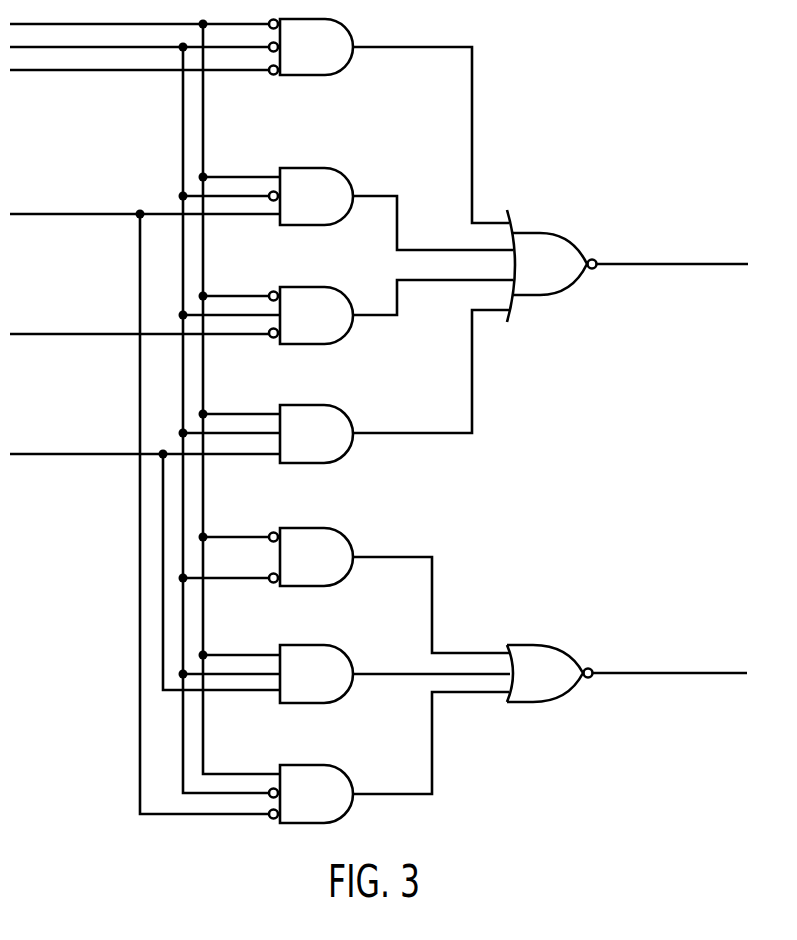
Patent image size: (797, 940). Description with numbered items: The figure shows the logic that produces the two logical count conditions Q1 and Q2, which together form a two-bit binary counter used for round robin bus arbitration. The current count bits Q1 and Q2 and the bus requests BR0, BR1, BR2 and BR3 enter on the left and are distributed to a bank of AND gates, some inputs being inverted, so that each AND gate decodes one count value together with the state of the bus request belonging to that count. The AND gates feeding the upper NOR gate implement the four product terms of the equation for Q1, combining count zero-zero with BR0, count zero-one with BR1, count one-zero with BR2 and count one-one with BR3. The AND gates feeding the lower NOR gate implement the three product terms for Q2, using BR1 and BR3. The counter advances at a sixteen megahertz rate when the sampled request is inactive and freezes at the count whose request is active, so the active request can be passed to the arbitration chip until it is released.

The logical count condition Q1 is at (379, 388).
The logical count condition Q2 is at (378, 410).
The bus request BR0 is at (139, 60).
The bus request BR1 is at (145, 503).
The bus request BR2 is at (139, 323).
The bus request BR3 is at (145, 560).